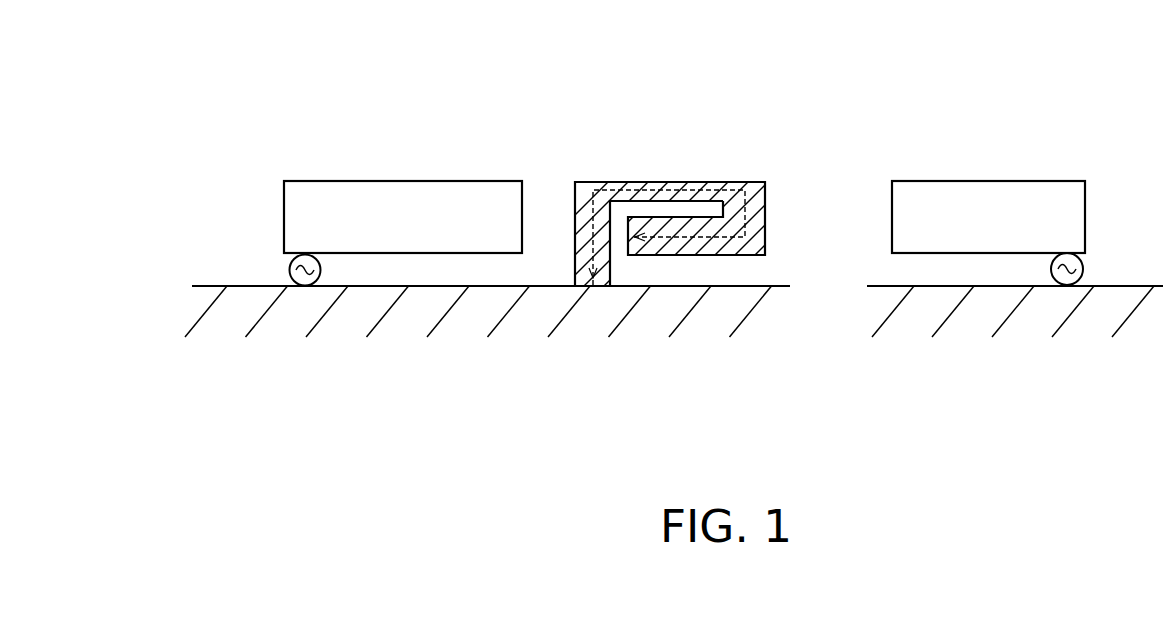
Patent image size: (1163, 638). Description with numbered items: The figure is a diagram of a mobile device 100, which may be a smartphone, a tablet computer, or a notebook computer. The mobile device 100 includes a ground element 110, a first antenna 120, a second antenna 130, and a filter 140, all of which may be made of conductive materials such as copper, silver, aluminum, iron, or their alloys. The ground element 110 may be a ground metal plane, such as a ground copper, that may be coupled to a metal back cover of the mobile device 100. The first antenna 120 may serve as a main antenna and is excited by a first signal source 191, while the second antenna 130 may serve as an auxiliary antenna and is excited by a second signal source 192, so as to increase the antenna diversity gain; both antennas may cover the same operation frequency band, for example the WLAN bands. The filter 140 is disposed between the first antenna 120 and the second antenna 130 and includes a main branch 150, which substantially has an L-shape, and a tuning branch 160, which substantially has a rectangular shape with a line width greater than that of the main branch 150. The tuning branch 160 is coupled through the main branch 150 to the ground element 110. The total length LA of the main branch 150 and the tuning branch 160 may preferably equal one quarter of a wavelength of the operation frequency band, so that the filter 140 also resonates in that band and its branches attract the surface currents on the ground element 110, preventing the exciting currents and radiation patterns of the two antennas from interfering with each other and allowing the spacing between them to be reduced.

The mobile device 100 is at (220, 52).
The ground element 110 is at (223, 322).
The first antenna 120 is at (988, 181).
The second antenna 130 is at (401, 181).
The filter 140 is at (680, 187).
The main branch 150 is at (649, 181).
The tuning branch 160 is at (622, 96).
The first signal source 191 is at (1085, 268).
The second signal source 192 is at (322, 267).
The total length LA is at (693, 238).